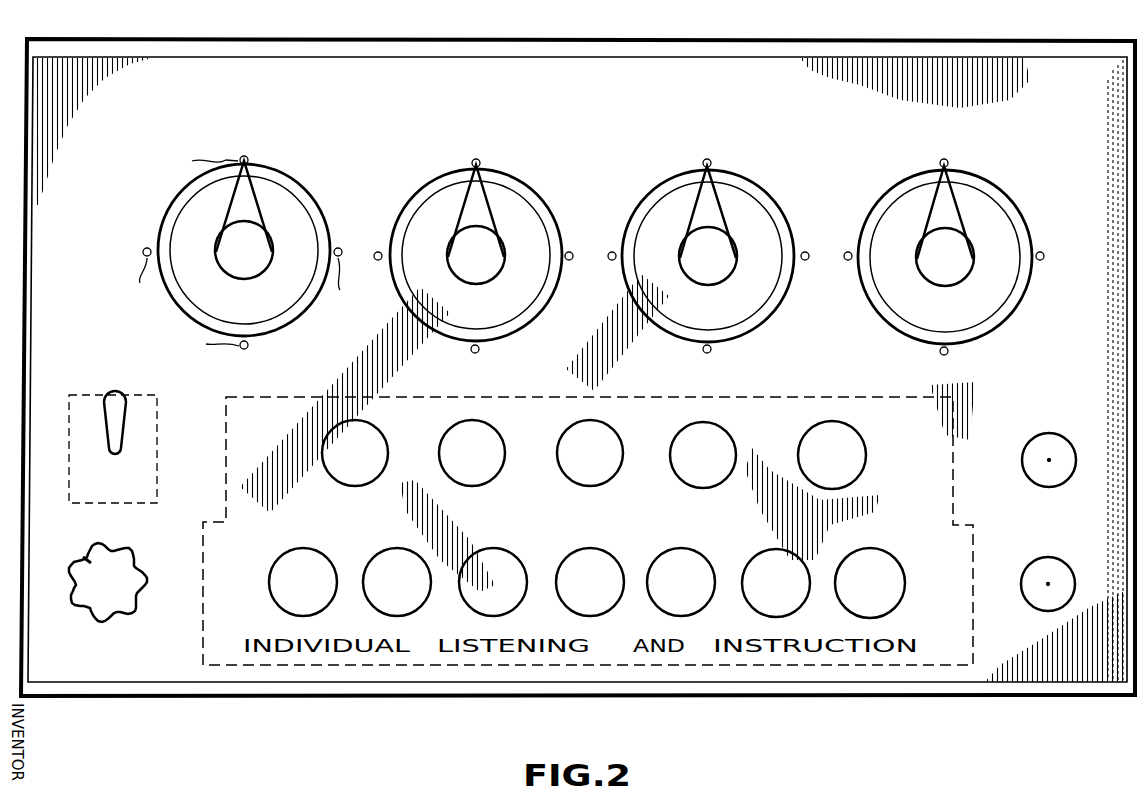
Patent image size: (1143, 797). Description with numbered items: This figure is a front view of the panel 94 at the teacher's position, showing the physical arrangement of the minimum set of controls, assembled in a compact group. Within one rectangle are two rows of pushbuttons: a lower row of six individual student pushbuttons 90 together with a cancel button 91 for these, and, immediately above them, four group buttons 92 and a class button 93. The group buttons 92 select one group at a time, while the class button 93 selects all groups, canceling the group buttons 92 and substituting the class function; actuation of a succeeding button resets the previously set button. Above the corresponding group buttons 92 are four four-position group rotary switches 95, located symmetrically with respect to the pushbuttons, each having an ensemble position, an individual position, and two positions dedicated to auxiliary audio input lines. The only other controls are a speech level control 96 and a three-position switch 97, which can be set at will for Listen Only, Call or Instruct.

The individual student pushbuttons 90 is at (386, 553).
The cancel button 91 is at (883, 555).
The group buttons 92 is at (455, 435).
The class button 93 is at (866, 455).
The panel 94 is at (30, 567).
The four-position group rotary switches 95 is at (293, 213).
The speech level control 96 is at (97, 590).
The three-position switch 97 is at (69, 417).